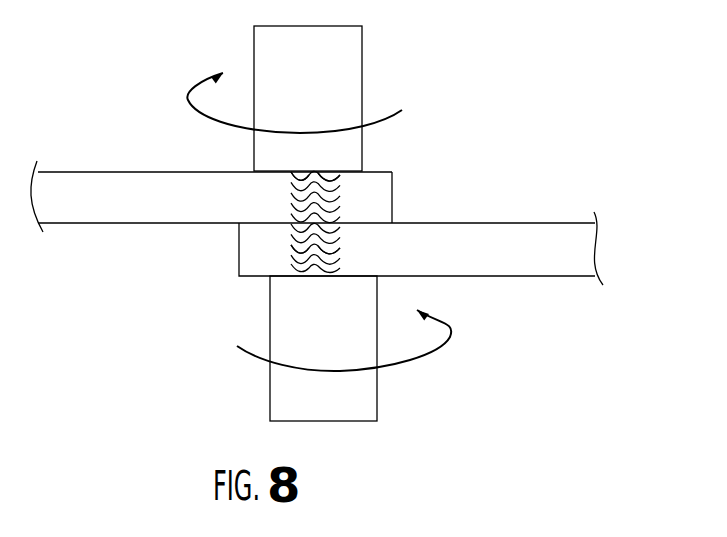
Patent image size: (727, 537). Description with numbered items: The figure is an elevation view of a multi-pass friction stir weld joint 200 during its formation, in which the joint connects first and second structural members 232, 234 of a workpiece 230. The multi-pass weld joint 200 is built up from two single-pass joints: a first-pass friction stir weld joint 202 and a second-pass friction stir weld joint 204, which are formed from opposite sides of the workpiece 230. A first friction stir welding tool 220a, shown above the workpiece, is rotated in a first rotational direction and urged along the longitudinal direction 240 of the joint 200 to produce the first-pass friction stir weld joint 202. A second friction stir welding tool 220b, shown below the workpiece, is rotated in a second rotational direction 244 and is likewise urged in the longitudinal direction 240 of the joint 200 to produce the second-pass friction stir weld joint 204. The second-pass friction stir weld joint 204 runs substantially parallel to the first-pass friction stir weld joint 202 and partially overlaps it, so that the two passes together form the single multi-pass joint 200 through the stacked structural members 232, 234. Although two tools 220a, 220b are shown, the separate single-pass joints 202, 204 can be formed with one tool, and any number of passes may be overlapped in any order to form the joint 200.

The multi-pass friction stir weld joint 200 is at (270, 253).
The first-pass friction stir weld joint 202 is at (272, 195).
The second-pass friction stir weld joint 204 is at (343, 246).
The first friction stir welding tool 220a is at (362, 50).
The second friction stir welding tool 220b is at (345, 421).
The workpiece 230 is at (548, 130).
The first structural member 232 is at (533, 223).
The second structural member 234 is at (93, 225).
The longitudinal direction 240 is at (392, 117).
The second rotational direction 244 is at (417, 363).